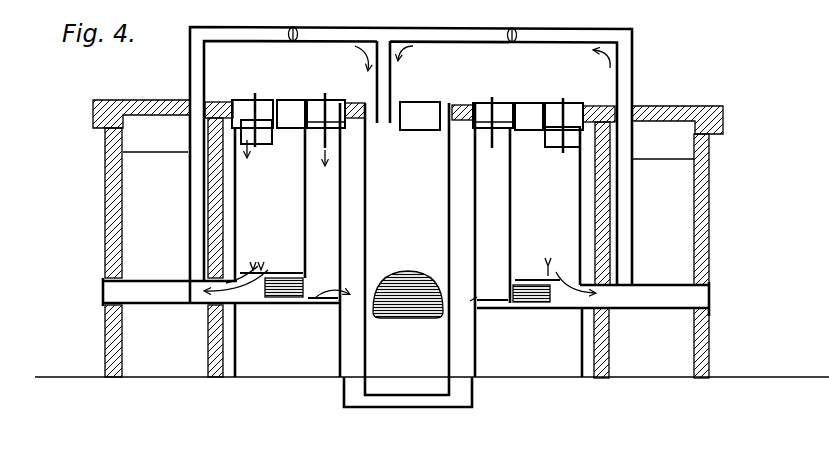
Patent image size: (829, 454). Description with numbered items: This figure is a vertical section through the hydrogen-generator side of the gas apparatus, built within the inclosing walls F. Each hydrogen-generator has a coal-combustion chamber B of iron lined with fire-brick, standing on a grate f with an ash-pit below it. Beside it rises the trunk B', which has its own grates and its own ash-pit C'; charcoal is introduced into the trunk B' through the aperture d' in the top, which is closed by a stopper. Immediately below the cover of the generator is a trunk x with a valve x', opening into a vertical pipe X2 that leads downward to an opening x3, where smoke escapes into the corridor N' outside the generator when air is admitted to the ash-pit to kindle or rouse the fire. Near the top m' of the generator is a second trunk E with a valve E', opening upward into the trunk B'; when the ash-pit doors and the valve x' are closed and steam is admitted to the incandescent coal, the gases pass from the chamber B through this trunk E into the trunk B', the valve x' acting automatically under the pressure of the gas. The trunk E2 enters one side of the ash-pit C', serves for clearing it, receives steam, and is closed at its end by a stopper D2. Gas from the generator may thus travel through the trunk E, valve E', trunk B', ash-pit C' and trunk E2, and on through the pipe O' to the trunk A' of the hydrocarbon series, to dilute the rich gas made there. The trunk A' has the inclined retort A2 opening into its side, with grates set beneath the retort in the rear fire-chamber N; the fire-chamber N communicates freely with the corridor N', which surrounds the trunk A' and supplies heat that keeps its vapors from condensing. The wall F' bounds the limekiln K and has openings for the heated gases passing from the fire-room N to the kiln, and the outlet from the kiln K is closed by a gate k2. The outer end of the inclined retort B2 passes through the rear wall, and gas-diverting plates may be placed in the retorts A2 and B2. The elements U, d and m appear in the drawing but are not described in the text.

The gas conduit pipe U is at (405, 160).
The pipe O' is at (391, 82).
The inclosing walls F is at (402, 239).
The wall F' is at (409, 240).
The gate k2 is at (408, 146).
The coal-combustion chamber B is at (271, 252).
The trunk B' is at (546, 252).
The vertical pipe X2 is at (408, 240).
The opening x3 is at (401, 293).
The trunk A' is at (407, 249).
The rear fire-chamber N is at (355, 173).
The corridor N' is at (462, 174).
The inclined retort A2 is at (408, 294).
The kiln K is at (408, 392).
The trunk E2 is at (406, 294).
The stopper D2 is at (404, 297).
The grate f is at (400, 269).
The inclined retort B2 is at (407, 290).
The ash-pit C' is at (400, 283).
The valve E' is at (407, 123).
The trunk E is at (410, 133).
The aperture d' is at (291, 114).
The opening for stirrer d is at (472, 120).
The valve x' is at (326, 116).
The trunk x is at (415, 122).
The top m' is at (406, 93).
The cover m is at (416, 95).